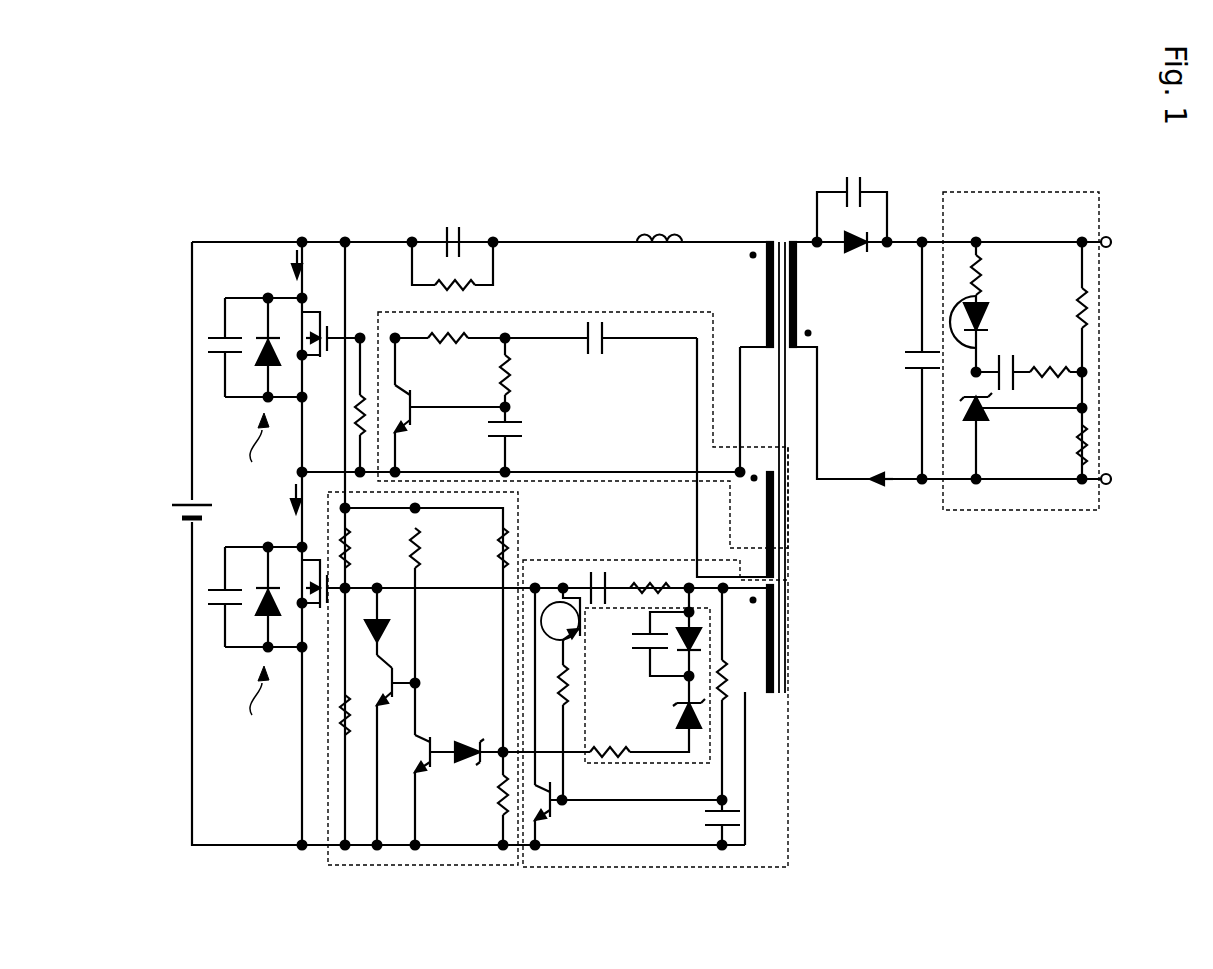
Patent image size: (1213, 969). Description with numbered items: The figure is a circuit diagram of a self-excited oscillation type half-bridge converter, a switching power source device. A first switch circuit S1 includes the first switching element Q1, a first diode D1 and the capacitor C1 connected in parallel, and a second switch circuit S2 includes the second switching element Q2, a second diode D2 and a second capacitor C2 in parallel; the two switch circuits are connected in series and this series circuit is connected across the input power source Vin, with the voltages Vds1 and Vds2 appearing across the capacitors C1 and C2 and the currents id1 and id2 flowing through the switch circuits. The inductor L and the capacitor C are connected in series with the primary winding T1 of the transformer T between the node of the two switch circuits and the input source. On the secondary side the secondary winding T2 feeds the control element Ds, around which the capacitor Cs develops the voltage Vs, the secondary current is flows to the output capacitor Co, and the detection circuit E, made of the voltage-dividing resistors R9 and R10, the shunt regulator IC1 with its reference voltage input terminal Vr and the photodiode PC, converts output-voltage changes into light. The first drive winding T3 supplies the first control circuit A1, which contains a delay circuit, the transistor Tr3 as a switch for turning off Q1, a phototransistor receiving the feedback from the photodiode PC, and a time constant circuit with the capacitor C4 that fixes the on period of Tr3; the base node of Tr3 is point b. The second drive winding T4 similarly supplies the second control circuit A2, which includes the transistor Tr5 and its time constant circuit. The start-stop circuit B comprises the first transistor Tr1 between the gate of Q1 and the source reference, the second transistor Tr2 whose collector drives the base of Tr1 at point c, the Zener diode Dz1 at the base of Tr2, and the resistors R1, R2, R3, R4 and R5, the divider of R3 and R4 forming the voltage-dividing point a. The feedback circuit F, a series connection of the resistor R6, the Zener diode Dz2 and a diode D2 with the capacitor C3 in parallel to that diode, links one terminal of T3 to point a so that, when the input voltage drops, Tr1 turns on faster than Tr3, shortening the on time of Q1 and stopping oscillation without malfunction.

The capacitor C is at (442, 231).
The inductor L is at (659, 223).
The transformer T is at (780, 452).
The primary winding T1 is at (753, 294).
The secondary winding T2 is at (808, 294).
The first drive winding T3 is at (755, 638).
The second drive winding T4 is at (756, 524).
The first switching element Q1 is at (313, 568).
The second switching element Q2 is at (333, 316).
The capacitor C1 is at (223, 578).
The second capacitor C2 is at (223, 325).
The first diode D1 is at (330, 585).
The second diode D2 is at (476, 478).
The first switch circuit S1 is at (252, 697).
The second switch circuit S2 is at (252, 444).
The input power source Vin is at (212, 488).
The voltage across capacitor C1 Vds1 is at (177, 600).
The voltage across capacitor C2 Vds2 is at (177, 345).
The current flowing through switch circuit S1 id1 is at (281, 497).
The current flowing through switch circuit S2 id2 is at (282, 264).
The first transistor Tr1 is at (413, 680).
The second transistor Tr2 is at (406, 753).
The transistor Tr3 is at (557, 809).
The transistor Tr5 is at (415, 415).
The resistor R1 is at (361, 548).
The resistor R2 is at (432, 548).
The resistor R3 is at (522, 548).
The resistor R4 is at (484, 795).
The resistor R5 is at (329, 712).
The resistor R6 is at (610, 740).
The voltage-dividing resistor R9 is at (1061, 308).
The voltage-dividing resistor R10 is at (1056, 445).
The Zener diode Dz1 is at (466, 742).
The Zener diode Dz2 is at (668, 715).
The capacitor C3 is at (640, 628).
The capacitor C4 is at (704, 823).
The control element Ds is at (857, 255).
The voltage across capacitor Cs Vs is at (852, 176).
The capacitor Cs is at (911, 199).
The output capacitor Co is at (906, 363).
The secondary current is is at (876, 469).
The photodiode PC is at (959, 316).
The reference voltage input terminal Vr is at (987, 416).
The shunt regulator IC1 is at (946, 439).
The detection circuit E is at (942, 512).
The first control circuit A1 is at (790, 868).
The second control circuit A2 is at (703, 304).
The start-stop circuit B is at (444, 700).
The feedback circuit F is at (647, 702).
The voltage-dividing point a is at (498, 740).
The point b is at (570, 802).
The point c is at (420, 672).